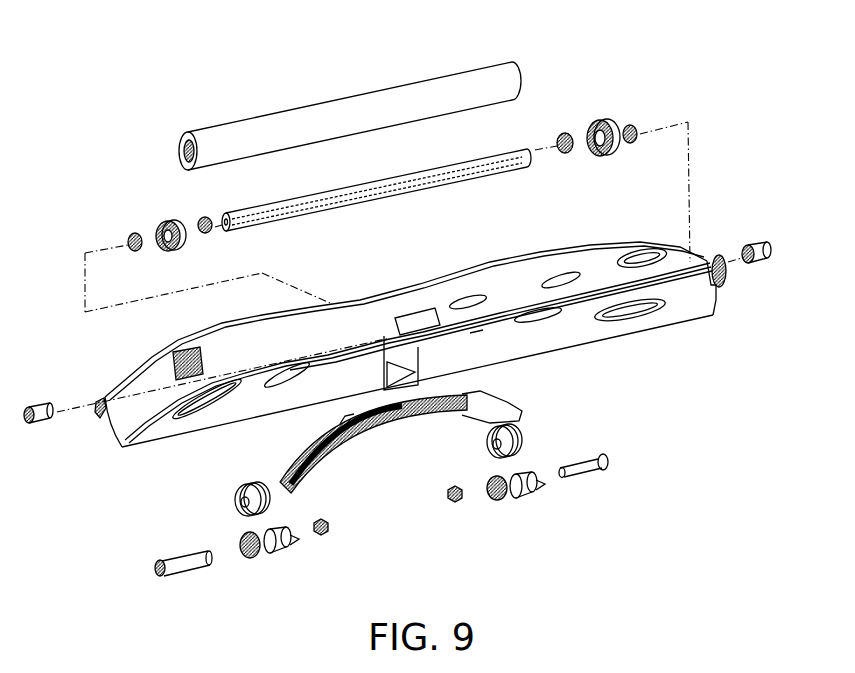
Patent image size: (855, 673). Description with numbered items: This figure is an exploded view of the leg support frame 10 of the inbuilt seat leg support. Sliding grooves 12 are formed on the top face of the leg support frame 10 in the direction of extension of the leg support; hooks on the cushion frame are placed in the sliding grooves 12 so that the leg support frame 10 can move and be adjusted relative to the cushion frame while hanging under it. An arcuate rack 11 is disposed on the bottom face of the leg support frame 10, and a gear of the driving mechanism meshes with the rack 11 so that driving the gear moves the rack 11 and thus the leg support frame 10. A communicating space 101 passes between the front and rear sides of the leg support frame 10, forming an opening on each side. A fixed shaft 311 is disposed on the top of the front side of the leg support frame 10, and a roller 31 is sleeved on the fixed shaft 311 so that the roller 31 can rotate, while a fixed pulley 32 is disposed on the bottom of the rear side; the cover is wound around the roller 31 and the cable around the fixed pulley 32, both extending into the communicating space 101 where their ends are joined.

The leg support frame 10 is at (722, 184).
The communicating space 101 is at (597, 331).
The arcuate rack 11 is at (343, 442).
The sliding grooves 12 is at (607, 256).
The roller 31 is at (372, 108).
The fixed shaft 311 is at (287, 208).
The fixed pulley 32 is at (515, 441).